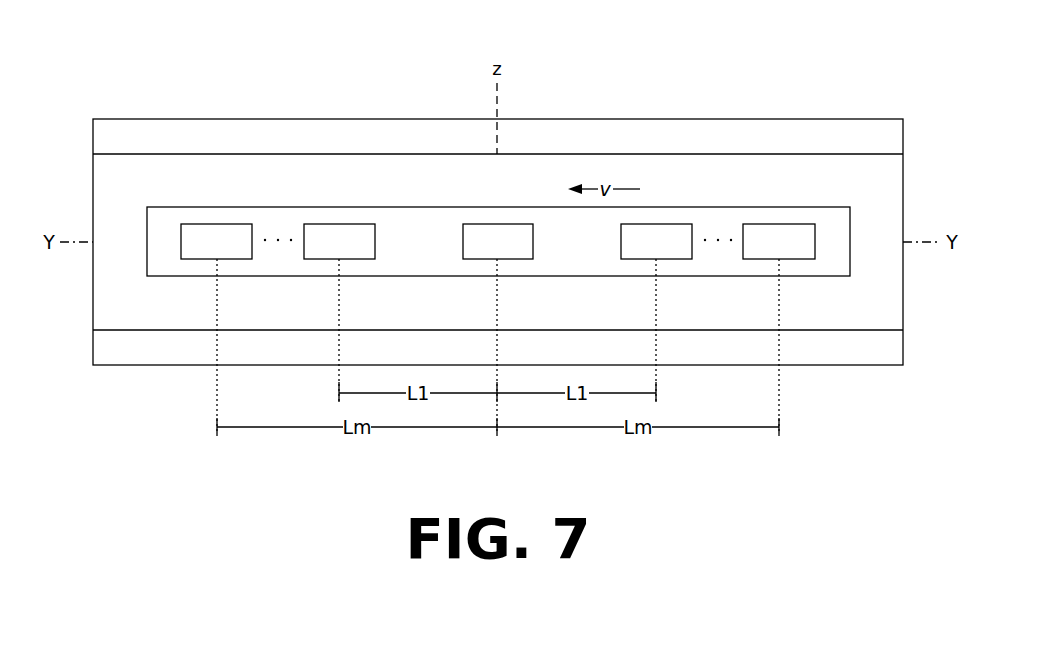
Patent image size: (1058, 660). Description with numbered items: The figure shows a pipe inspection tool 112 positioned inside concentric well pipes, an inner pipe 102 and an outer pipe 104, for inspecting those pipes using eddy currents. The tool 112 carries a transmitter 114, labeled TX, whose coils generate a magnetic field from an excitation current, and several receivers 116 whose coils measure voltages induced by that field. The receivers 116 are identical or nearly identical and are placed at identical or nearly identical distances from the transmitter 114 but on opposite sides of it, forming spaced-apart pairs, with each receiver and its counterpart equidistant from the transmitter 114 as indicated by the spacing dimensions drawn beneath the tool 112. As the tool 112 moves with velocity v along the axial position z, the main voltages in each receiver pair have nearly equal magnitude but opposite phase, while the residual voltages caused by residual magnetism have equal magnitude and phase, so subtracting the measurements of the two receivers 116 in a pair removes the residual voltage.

The inner pipe 102 is at (182, 153).
The outer pipe 104 is at (182, 118).
The pipe inspection tool 112 is at (182, 206).
The transmitter 114 is at (497, 223).
The receivers 116 is at (222, 223).